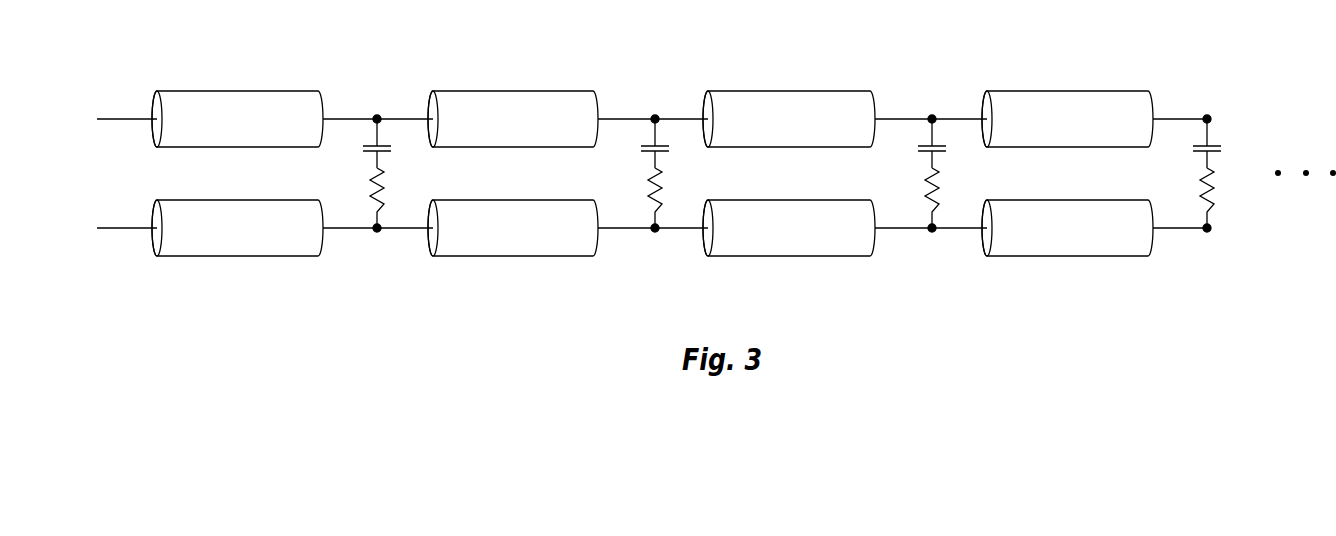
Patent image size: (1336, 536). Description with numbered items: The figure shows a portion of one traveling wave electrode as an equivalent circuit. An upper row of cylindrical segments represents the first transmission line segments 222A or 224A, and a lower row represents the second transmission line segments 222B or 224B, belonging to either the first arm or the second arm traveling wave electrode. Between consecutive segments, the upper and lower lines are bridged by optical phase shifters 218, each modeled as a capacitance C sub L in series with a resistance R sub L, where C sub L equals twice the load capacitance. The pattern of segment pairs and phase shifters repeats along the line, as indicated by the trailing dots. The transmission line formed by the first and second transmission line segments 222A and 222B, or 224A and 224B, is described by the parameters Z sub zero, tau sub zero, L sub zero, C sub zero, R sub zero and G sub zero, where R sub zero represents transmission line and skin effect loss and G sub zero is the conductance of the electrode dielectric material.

The first transmission line segment 222A is at (652, 99).
The first transmission line segment 224A is at (448, 91).
The second transmission line segment 222B is at (652, 250).
The second transmission line segment 224B is at (448, 256).
The optical phase shifter 218 is at (628, 188).